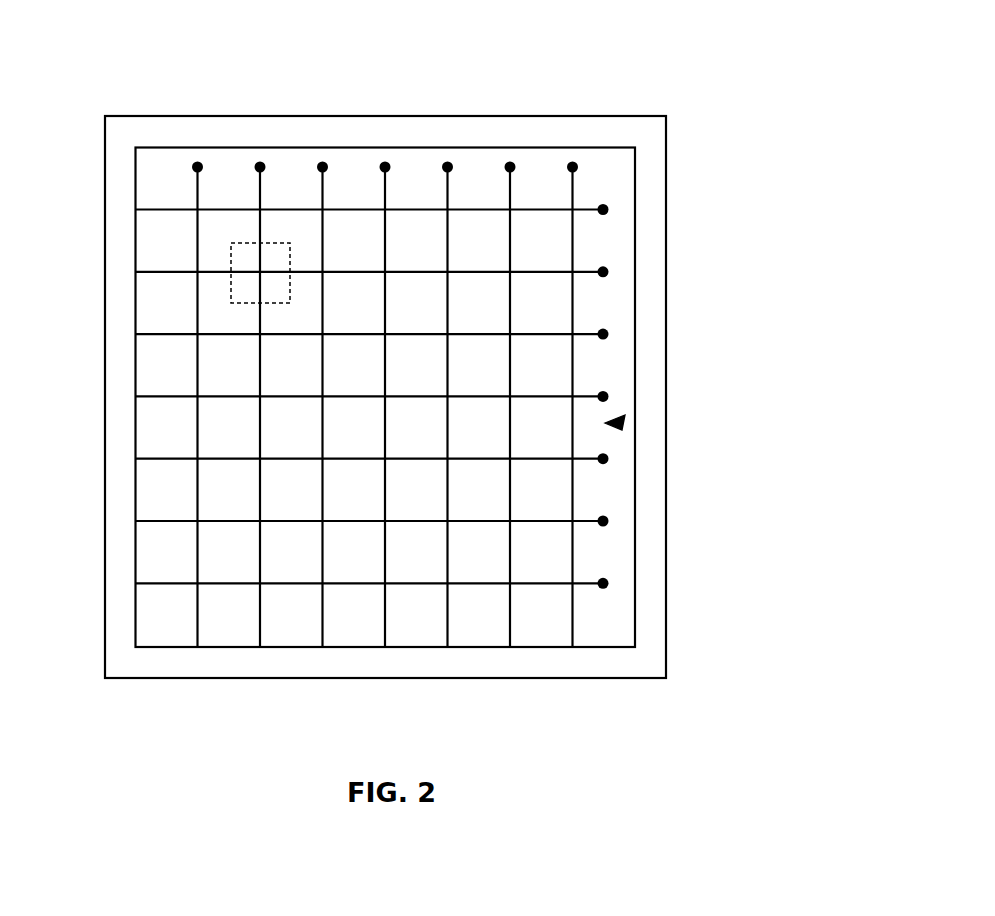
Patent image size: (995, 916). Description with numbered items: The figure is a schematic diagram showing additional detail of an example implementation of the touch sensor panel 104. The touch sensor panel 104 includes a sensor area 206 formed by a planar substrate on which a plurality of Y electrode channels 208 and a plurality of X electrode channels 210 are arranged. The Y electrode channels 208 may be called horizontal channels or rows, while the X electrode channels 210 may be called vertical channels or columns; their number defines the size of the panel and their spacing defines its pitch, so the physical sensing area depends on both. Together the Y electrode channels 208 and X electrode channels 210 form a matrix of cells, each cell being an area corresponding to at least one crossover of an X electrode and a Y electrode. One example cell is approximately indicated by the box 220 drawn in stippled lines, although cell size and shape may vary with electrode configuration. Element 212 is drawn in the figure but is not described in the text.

The touch sensor panel 104 is at (633, 73).
The display panel 212 is at (650, 350).
The X electrode channels 210 is at (260, 164).
The Y electrode channels 208 is at (608, 209).
The sensor area 206 is at (625, 420).
The box 220 is at (231, 261).